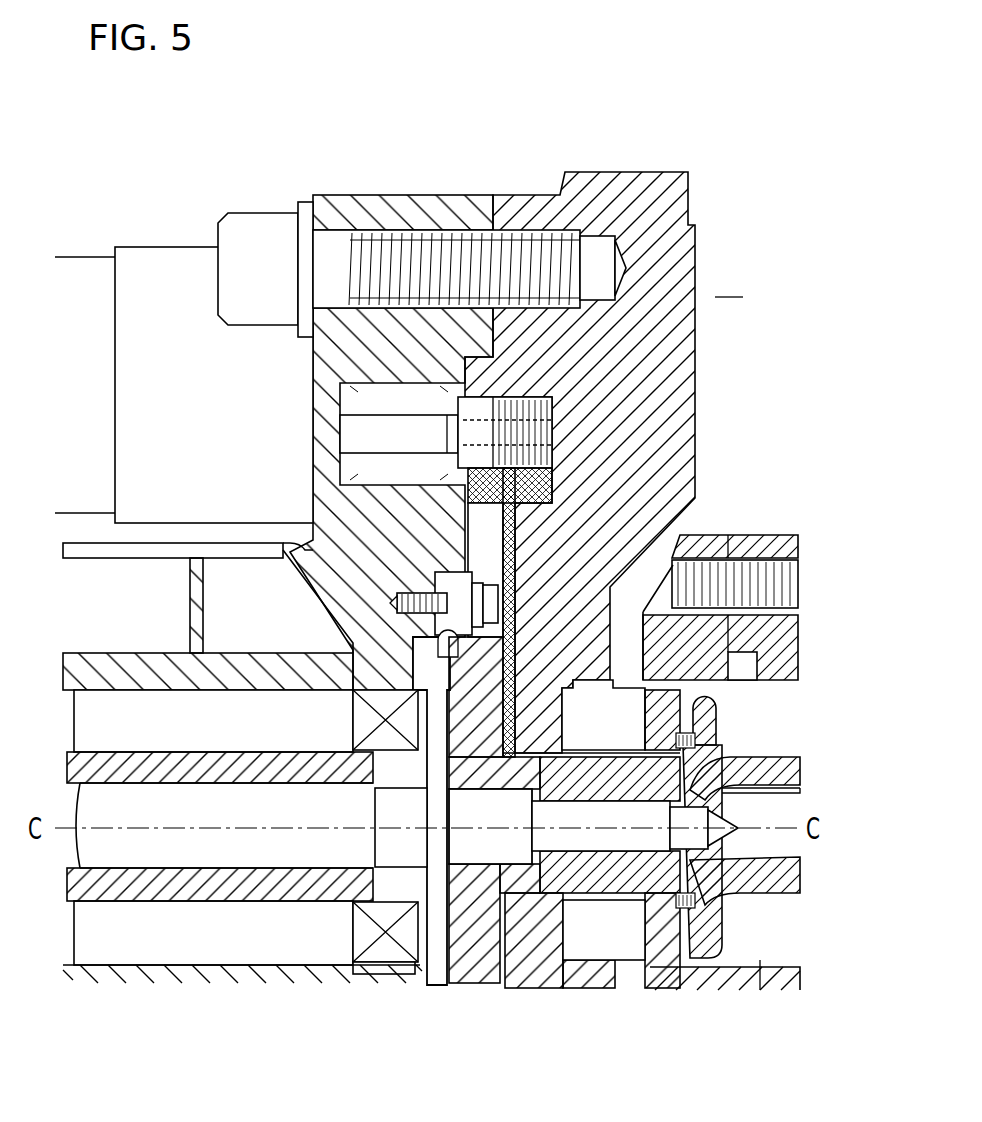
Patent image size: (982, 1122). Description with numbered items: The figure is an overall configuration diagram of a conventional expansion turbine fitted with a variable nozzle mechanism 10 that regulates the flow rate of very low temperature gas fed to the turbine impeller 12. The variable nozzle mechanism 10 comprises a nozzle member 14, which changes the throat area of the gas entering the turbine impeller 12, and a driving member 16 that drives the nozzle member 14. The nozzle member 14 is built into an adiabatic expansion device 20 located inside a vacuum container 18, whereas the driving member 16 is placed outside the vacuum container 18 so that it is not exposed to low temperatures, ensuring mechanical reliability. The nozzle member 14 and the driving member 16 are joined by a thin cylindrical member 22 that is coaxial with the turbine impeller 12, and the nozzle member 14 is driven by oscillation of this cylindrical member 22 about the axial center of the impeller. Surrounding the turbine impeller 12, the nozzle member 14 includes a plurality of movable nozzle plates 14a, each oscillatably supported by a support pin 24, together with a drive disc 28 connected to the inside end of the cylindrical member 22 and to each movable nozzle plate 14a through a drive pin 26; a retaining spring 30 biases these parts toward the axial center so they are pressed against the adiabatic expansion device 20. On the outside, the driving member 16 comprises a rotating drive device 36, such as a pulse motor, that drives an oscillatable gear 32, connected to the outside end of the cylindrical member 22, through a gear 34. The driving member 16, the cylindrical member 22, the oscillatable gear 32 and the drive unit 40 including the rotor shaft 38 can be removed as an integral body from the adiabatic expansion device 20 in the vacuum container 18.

The variable nozzle mechanism 10 is at (804, 478).
The turbine impeller 12 is at (735, 830).
The nozzle member 14 is at (765, 838).
The movable nozzle plate 14a is at (702, 851).
The driving member 16 is at (518, 662).
The vacuum container 18 is at (778, 282).
The adiabatic expansion device 20 is at (720, 914).
The cylindrical member 22 is at (624, 750).
The support pin 24 is at (797, 790).
The drive pin 26 is at (794, 758).
The drive disc 28 is at (716, 704).
The retaining spring 30 is at (494, 810).
The oscillatable gear 32 is at (553, 452).
The gear 34 is at (547, 400).
The rotating drive device 36 is at (161, 262).
The rotor shaft 38 is at (594, 843).
The drive unit 40 is at (478, 962).